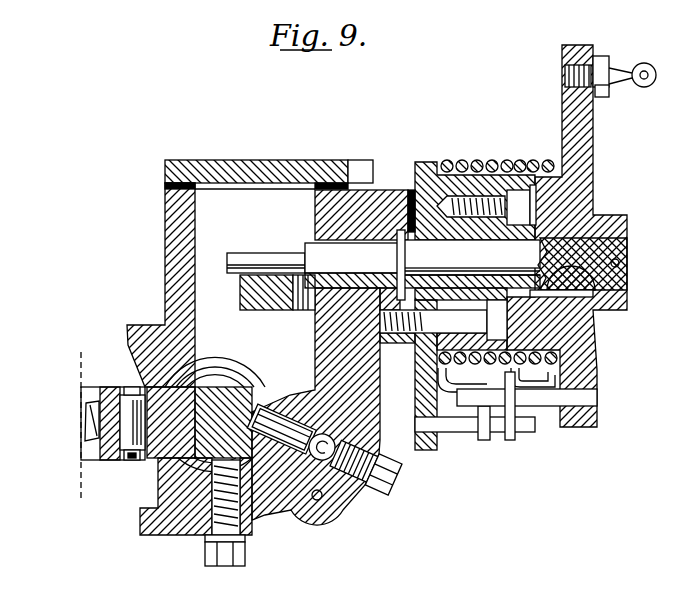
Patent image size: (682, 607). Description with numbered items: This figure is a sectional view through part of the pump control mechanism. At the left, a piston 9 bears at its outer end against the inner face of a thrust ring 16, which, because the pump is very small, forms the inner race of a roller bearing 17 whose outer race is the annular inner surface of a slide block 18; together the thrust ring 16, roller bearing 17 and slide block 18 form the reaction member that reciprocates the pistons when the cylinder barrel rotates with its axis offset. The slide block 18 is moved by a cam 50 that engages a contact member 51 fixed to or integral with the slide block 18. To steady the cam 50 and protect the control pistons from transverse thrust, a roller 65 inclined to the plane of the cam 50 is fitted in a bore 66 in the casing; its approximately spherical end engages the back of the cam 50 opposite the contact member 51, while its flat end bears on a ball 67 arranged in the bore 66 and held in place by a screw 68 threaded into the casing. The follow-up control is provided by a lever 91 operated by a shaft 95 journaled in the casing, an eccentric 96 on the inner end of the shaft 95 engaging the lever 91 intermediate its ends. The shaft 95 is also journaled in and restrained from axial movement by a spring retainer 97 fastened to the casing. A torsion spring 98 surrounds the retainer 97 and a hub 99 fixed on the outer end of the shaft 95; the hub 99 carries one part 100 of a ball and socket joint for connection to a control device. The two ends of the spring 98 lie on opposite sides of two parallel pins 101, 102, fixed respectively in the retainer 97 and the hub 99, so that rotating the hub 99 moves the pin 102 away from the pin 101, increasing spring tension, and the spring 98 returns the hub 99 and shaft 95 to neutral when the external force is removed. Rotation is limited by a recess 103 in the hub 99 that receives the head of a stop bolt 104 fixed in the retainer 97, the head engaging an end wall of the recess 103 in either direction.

The piston 9 is at (84, 412).
The thrust ring 16 is at (108, 395).
The roller bearing 17 is at (128, 460).
The slide block 18 is at (139, 389).
The cam 50 is at (225, 397).
The contact member 51 is at (160, 492).
The roller 65 is at (282, 429).
The bore 66 is at (276, 412).
The ball 67 is at (326, 440).
The screw 68 is at (389, 483).
The lever 91 is at (250, 305).
The shaft 95 is at (466, 265).
The eccentric 96 is at (277, 253).
The spring retainer 97 is at (420, 161).
The torsion spring 98 is at (448, 160).
The hub 99 is at (594, 187).
The ball and socket joint part 100 is at (645, 63).
The pin 101 is at (445, 425).
The pin 102 is at (550, 407).
The recess 103 is at (530, 188).
The stop bolt 104 is at (513, 192).